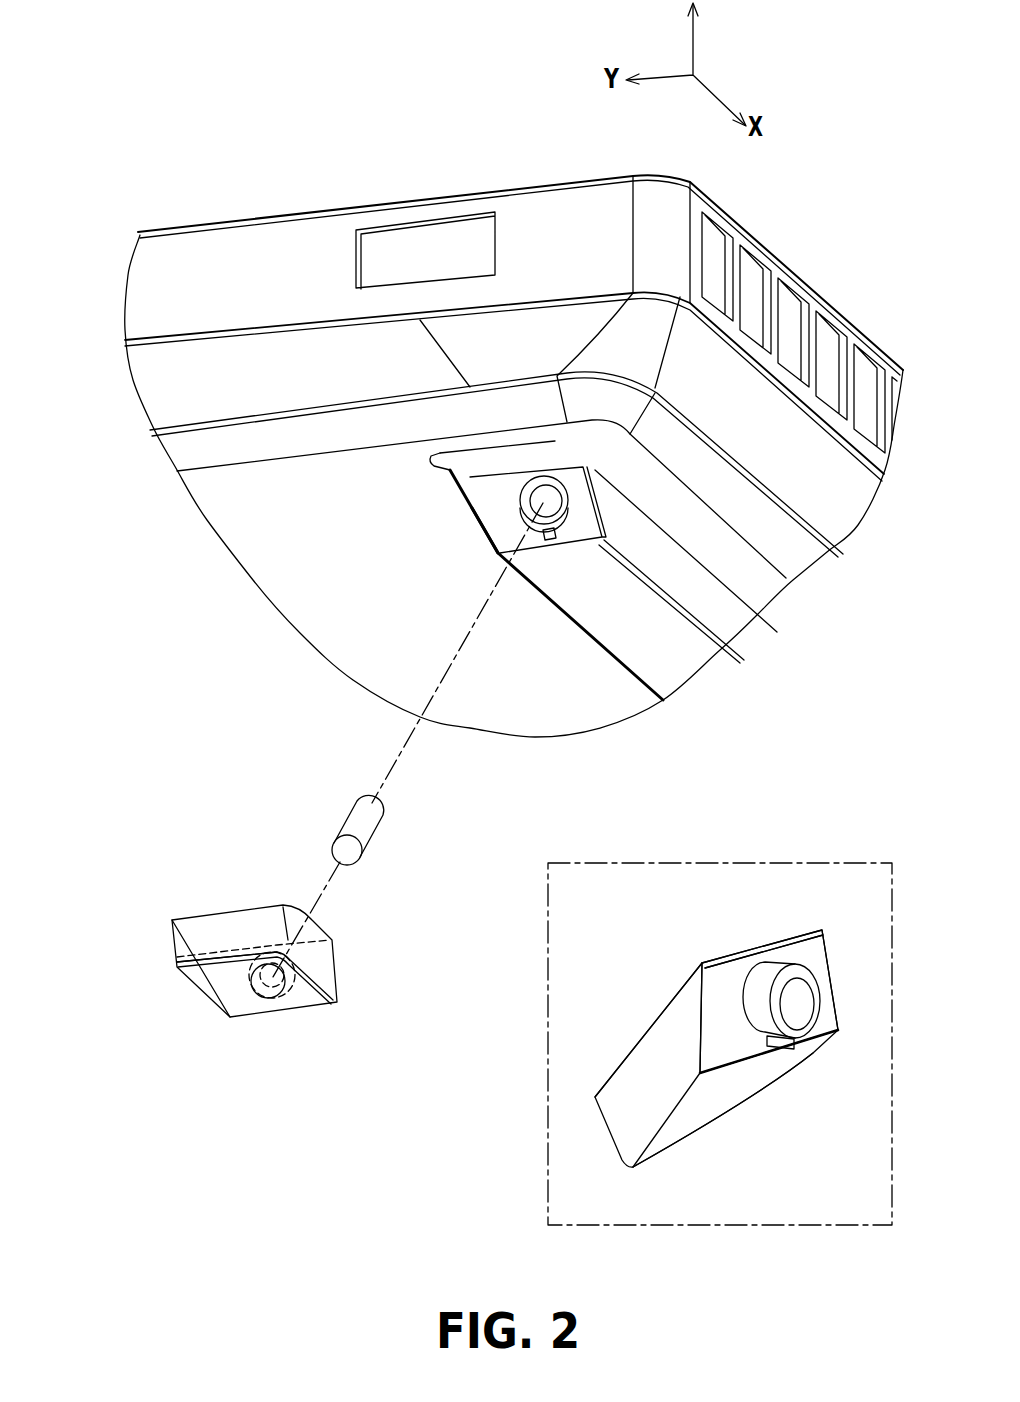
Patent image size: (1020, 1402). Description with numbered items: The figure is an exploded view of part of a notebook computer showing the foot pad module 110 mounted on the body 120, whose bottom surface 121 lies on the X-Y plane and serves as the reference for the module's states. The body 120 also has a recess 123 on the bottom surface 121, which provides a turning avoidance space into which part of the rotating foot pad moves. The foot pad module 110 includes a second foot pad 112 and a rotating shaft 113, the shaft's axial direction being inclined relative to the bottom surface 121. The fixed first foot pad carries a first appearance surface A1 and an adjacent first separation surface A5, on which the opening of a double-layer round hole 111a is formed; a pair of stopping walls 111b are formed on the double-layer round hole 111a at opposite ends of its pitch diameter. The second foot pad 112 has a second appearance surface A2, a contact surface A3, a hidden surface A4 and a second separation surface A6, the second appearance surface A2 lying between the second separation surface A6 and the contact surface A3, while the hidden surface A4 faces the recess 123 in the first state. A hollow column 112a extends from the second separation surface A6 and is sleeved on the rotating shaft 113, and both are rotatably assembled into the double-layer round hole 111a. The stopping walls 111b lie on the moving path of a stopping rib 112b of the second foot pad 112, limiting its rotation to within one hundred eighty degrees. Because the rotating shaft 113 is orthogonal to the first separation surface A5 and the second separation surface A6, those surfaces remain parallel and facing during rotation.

The foot pad module 110 is at (890, 51).
The second foot pad 112 is at (223, 1070).
The hollow column 112a is at (318, 1010).
The stopping rib 112b is at (294, 906).
The rotating shaft 113 is at (345, 818).
The body 120 is at (246, 263).
The bottom surface 121 is at (236, 525).
The recess 123 is at (459, 465).
The double-layer round hole 111a is at (567, 515).
The stopping walls 111b is at (534, 470).
The first appearance surface A1 is at (738, 594).
The second appearance surface A2 is at (331, 949).
The contact surface A3 is at (183, 948).
The hidden surface A4 is at (216, 924).
The first separation surface A5 is at (492, 519).
The second separation surface A6 is at (230, 964).